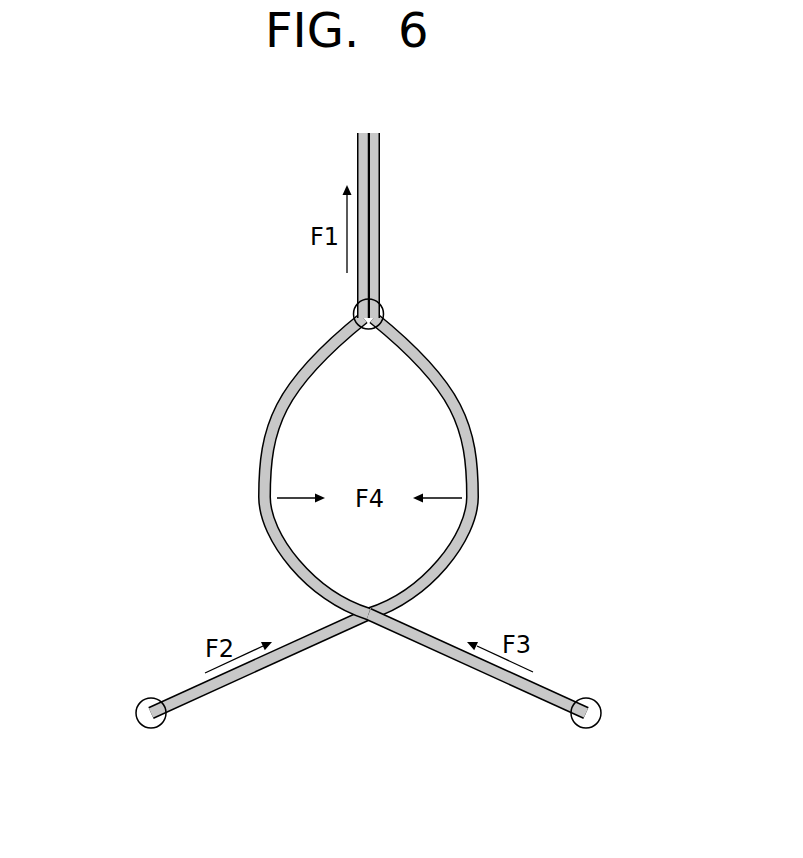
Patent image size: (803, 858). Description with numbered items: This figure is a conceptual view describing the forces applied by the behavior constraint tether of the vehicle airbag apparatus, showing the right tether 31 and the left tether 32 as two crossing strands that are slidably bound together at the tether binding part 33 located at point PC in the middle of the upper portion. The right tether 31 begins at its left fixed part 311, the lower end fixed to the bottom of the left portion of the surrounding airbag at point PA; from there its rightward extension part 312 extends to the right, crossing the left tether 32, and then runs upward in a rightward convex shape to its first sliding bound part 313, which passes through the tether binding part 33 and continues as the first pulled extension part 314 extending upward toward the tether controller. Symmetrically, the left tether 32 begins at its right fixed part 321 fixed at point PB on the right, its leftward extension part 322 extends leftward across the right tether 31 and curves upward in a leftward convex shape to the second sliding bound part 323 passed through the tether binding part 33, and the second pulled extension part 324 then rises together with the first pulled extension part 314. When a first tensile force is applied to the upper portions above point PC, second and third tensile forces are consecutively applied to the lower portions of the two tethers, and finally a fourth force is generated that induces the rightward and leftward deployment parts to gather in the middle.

The right tether 31 is at (367, 423).
The left fixed part 311 is at (151, 699).
The rightward extension part 312 is at (478, 490).
The first sliding bound part 313 is at (372, 313).
The first pulled extension part 314 is at (373, 172).
The left tether 32 is at (348, 423).
The right fixed part 321 is at (590, 700).
The leftward extension part 322 is at (258, 482).
The second sliding bound part 323 is at (360, 310).
The second pulled extension part 324 is at (365, 158).
The tether binding part 33 is at (383, 306).